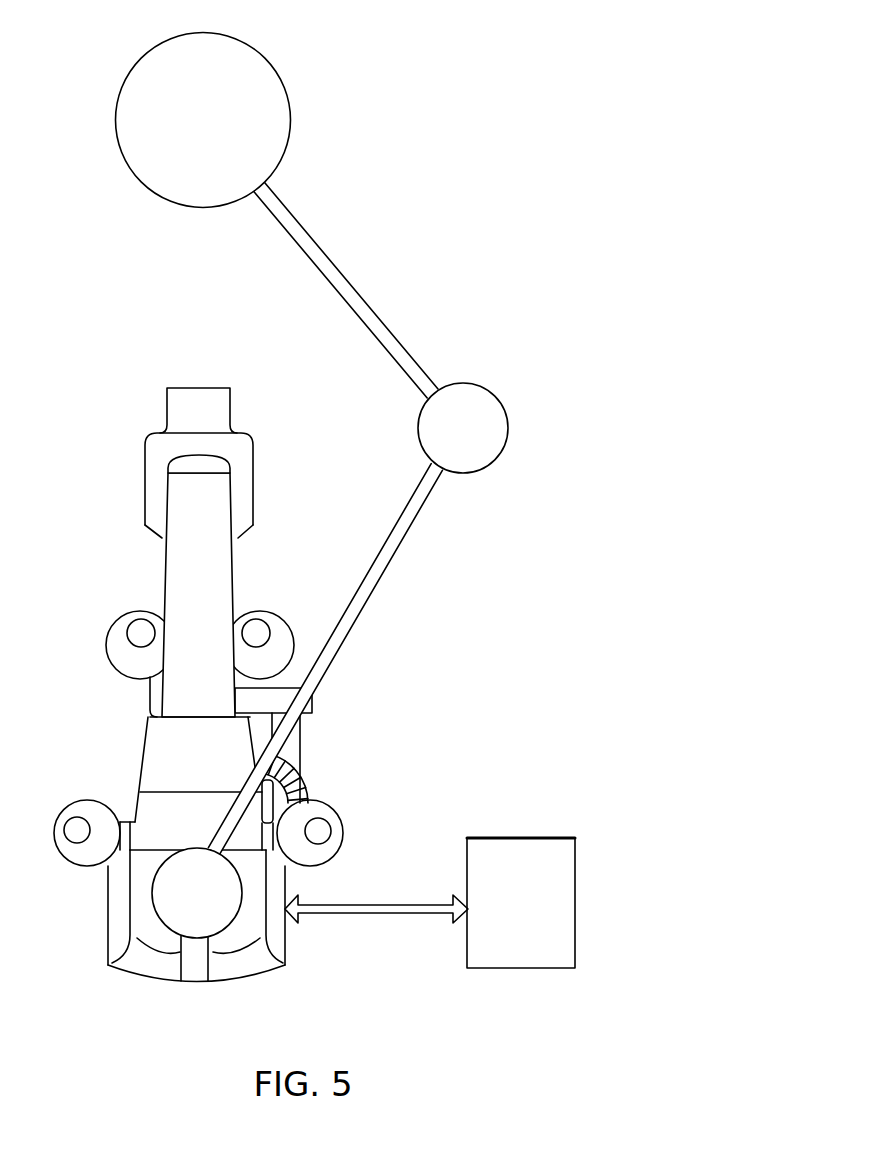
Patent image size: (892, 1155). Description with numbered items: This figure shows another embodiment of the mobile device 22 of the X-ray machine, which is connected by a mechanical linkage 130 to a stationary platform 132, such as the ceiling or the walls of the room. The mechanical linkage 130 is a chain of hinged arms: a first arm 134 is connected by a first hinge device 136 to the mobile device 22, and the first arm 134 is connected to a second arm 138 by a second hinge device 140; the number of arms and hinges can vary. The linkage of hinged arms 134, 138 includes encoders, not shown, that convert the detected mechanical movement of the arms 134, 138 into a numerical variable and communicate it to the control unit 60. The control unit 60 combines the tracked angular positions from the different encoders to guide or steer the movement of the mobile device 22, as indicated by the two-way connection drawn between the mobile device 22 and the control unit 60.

The mobile device 22 is at (164, 946).
The control unit 60 is at (510, 838).
The mechanical linkage 130 is at (338, 432).
The stationary platform 132 is at (288, 83).
The first arm 134 is at (341, 299).
The first hinge device 136 is at (180, 900).
The second arm 138 is at (382, 585).
The second hinge device 140 is at (468, 413).